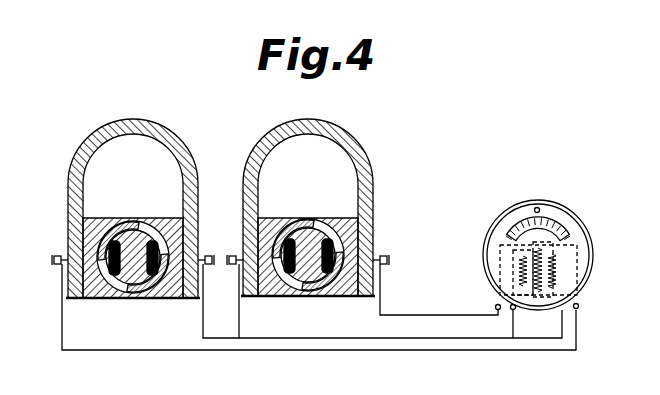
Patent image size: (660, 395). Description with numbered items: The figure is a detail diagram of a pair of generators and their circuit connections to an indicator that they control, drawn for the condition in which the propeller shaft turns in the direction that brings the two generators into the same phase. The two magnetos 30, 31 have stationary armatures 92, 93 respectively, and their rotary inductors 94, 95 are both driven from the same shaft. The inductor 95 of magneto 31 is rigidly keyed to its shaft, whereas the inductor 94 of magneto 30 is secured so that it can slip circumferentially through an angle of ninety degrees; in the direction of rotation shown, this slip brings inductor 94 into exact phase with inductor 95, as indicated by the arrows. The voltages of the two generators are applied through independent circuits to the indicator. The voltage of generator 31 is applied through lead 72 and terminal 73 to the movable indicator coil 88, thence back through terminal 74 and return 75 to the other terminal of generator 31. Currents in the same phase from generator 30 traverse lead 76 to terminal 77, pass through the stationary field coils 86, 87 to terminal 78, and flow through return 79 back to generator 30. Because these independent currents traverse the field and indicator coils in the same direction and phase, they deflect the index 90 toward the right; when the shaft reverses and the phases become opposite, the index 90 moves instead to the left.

The magneto 30 is at (362, 149).
The magneto 31 is at (76, 154).
The lead 72 is at (60, 327).
The terminal 73 is at (578, 307).
The terminal 74 is at (515, 309).
The return 75 is at (508, 340).
The lead 76 is at (221, 301).
The terminal 77 is at (510, 324).
The terminal 78 is at (495, 307).
The return 79 is at (439, 291).
The field coil 86 is at (522, 268).
The field coil 87 is at (554, 280).
The coil 88 is at (540, 262).
The index 90 is at (555, 229).
The stationary armature 92 is at (302, 282).
The stationary armature 93 is at (125, 279).
The rotary inductor 94 is at (320, 211).
The rotary inductor 95 is at (146, 212).